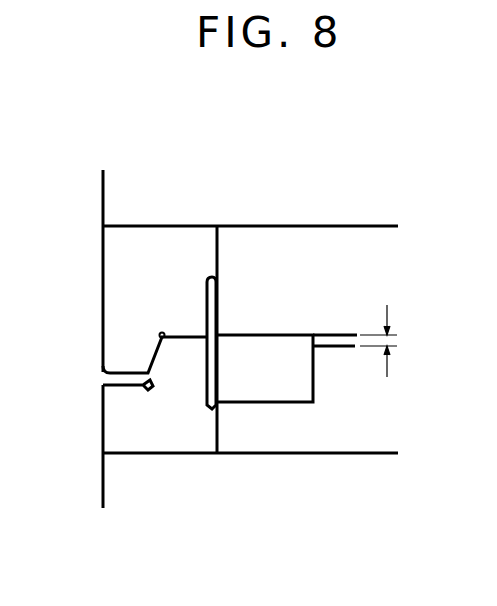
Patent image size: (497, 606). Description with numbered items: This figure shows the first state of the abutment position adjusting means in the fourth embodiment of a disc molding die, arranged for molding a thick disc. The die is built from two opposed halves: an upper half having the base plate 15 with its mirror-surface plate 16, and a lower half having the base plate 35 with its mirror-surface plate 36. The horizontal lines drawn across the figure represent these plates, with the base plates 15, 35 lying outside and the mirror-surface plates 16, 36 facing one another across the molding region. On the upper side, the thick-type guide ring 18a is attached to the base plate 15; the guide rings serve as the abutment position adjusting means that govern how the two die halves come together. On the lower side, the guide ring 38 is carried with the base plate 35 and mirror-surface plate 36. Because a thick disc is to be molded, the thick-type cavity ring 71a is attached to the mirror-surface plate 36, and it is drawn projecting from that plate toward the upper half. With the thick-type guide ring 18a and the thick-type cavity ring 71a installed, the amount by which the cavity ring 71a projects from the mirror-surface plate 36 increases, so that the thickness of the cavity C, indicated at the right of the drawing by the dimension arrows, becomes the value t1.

The base plate 15 is at (118, 195).
The base plate 35 is at (112, 477).
The mirror-surface plate 16 is at (322, 245).
The mirror-surface plate 36 is at (357, 437).
The thick-type guide ring 18a is at (165, 242).
The guide ring 38 is at (157, 440).
The thick-type cavity ring 71a is at (268, 420).
The cavity C is at (347, 335).
The thickness of the cavity t1 is at (378, 354).